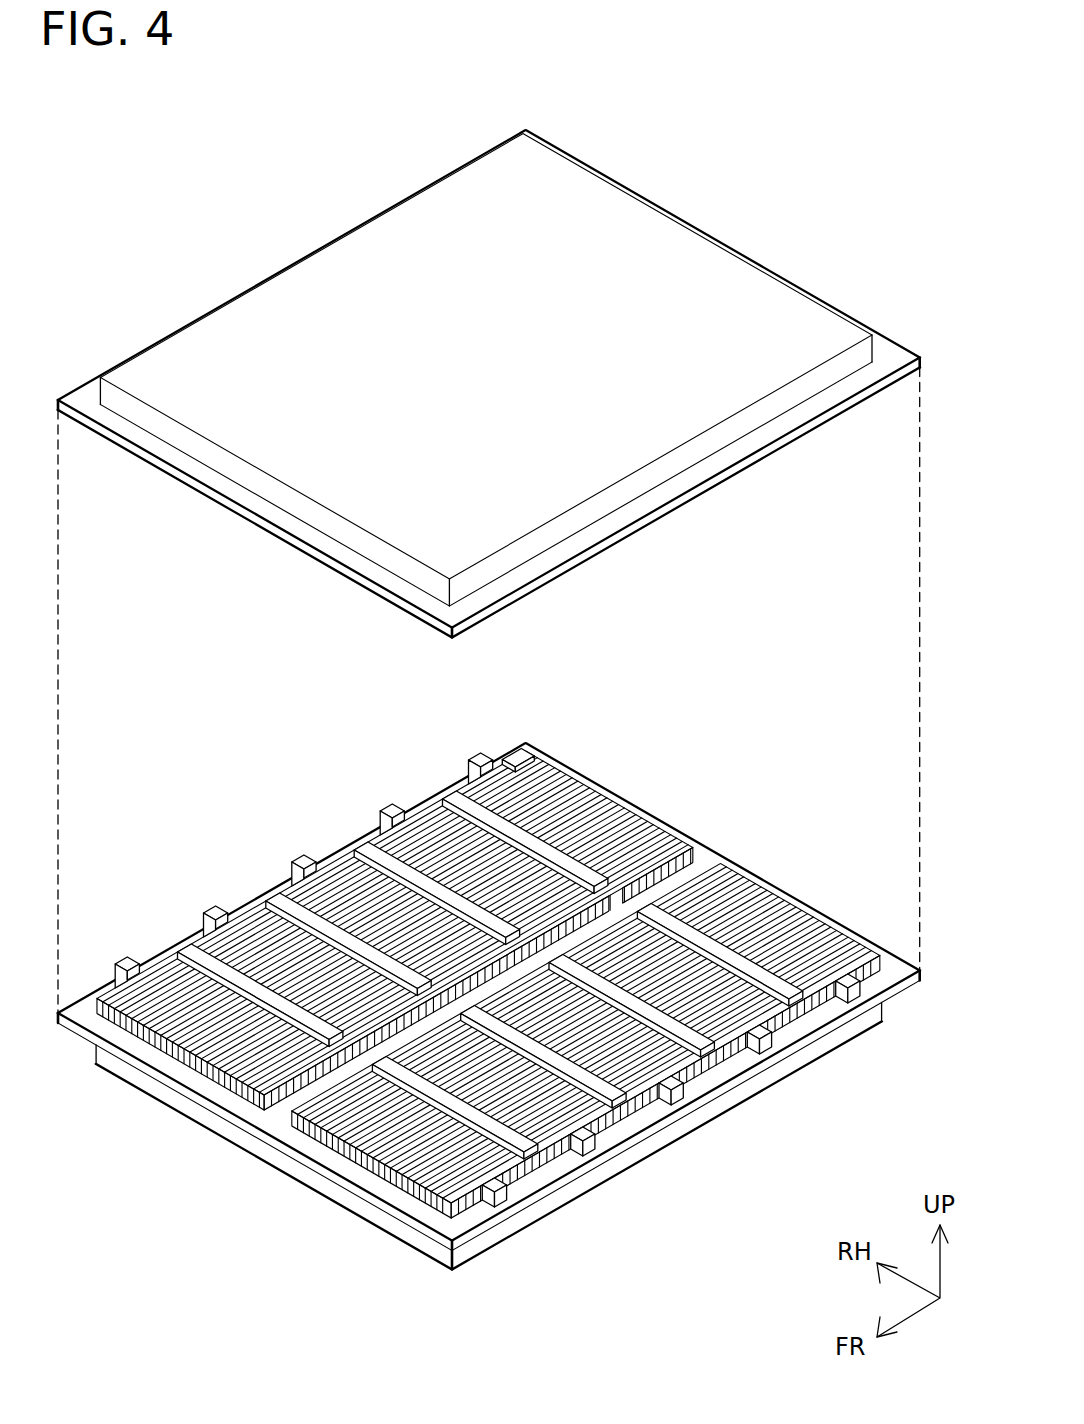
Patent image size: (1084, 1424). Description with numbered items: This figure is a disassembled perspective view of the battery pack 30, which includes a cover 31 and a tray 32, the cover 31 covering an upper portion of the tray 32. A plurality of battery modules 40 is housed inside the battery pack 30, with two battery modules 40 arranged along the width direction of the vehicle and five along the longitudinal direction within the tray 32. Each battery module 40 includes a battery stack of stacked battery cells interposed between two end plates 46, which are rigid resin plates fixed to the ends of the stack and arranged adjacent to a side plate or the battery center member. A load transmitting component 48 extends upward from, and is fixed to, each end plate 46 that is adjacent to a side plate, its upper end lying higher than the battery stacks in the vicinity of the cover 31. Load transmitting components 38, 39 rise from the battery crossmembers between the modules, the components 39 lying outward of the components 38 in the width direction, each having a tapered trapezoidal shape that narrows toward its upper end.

The battery pack 30 is at (153, 104).
The cover 31 is at (712, 280).
The tray 32 is at (635, 1152).
The load transmitting component 38 is at (665, 912).
The load transmitting component 39 is at (505, 765).
The battery module 40 is at (357, 1127).
The end plate 46 is at (468, 975).
The load transmitting component 48 is at (225, 915).